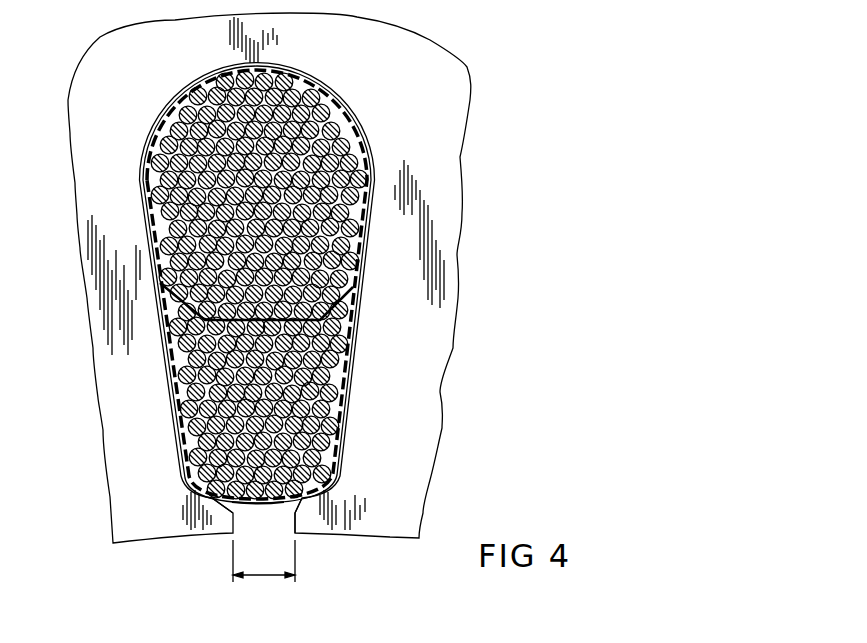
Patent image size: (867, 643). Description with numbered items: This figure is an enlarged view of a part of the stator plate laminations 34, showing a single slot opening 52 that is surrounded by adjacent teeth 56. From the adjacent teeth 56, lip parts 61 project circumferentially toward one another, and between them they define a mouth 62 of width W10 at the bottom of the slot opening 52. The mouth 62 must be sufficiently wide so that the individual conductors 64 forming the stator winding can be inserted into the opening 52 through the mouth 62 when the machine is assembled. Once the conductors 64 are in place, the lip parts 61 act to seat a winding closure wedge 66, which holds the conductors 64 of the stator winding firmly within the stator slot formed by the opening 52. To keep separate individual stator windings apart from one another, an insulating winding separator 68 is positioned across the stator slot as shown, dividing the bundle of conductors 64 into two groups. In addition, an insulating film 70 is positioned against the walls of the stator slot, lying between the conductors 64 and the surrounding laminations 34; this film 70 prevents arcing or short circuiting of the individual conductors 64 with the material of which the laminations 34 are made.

The plate laminations 34 is at (100, 37).
The adjacent teeth 56 is at (438, 195).
The slot opening 52 is at (343, 358).
The insulating film 70 is at (336, 102).
The individual conductors 64 is at (356, 155).
The insulating winding separator 68 is at (353, 287).
The winding closure wedge 66 is at (285, 501).
The mouth 62 is at (293, 523).
The lip parts 61 is at (222, 520).
The width of the mouth W10 is at (267, 577).